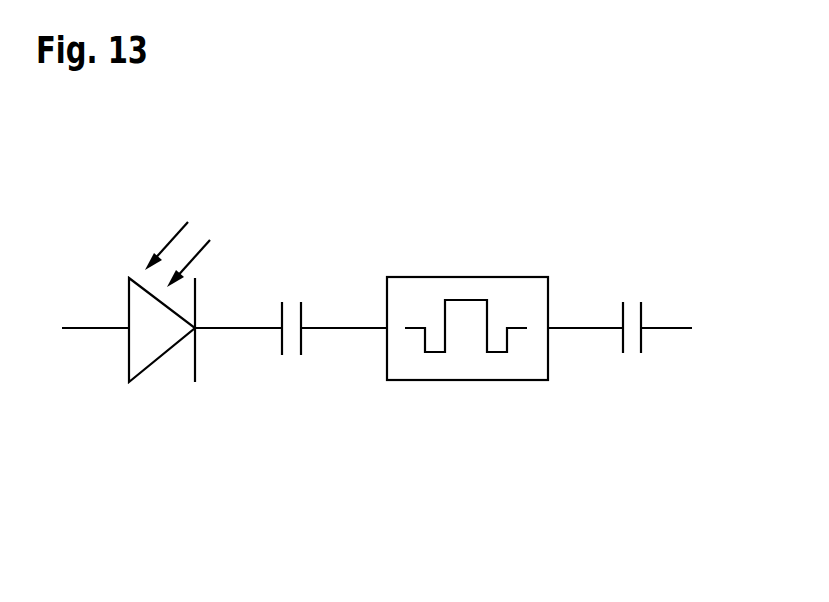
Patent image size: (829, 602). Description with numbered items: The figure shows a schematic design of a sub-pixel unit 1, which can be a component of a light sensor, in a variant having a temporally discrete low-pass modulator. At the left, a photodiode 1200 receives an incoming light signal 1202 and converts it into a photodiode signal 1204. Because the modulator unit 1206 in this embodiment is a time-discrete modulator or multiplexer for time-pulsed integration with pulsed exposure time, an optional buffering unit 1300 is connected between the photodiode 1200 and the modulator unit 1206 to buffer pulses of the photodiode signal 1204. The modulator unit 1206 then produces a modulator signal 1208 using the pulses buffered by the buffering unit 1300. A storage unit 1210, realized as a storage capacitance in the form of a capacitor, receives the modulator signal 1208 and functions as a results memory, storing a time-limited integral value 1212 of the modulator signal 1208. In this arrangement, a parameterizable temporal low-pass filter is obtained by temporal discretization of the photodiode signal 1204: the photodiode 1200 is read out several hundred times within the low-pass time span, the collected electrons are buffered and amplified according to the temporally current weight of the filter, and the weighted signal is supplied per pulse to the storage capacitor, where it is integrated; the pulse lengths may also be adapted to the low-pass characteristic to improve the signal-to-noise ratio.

The sub-pixel unit 1 is at (96, 184).
The photodiode 1200 is at (148, 366).
The light signal 1202 is at (176, 234).
The photodiode signal 1204 is at (253, 330).
The buffering unit 1300 is at (313, 308).
The modulator unit 1206 is at (515, 258).
The modulator signal 1208 is at (573, 330).
The storage unit 1210 is at (653, 308).
The time-limited integral value 1212 is at (677, 330).